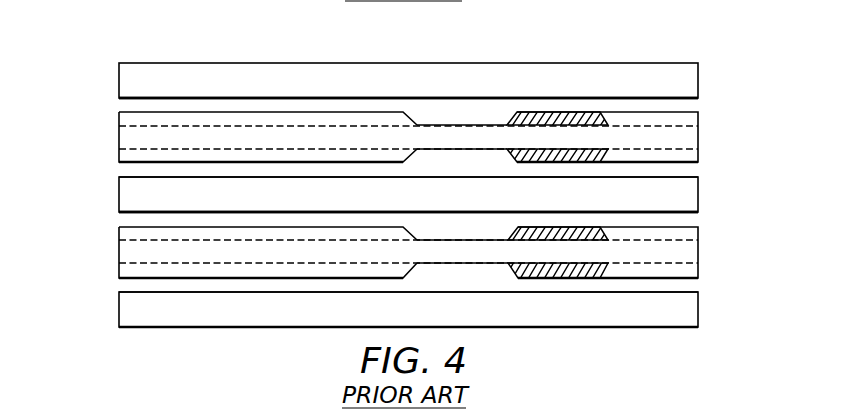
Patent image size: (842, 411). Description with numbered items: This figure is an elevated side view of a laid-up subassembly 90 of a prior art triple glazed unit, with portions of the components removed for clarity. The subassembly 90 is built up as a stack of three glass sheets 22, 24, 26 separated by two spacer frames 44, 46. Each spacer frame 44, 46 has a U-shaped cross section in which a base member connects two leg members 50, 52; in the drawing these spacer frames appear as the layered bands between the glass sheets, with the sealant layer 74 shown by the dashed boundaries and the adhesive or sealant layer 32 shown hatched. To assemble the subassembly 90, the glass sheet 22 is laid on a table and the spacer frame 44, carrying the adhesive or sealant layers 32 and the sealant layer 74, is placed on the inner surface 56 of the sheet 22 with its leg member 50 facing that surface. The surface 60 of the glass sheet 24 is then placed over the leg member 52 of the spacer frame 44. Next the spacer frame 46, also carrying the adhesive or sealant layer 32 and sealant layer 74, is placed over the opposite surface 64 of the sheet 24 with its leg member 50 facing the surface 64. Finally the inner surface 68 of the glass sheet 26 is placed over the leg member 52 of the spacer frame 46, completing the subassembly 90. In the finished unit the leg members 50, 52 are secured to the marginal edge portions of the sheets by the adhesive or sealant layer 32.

The glass sheet 22 is at (697, 308).
The glass sheet 24 is at (695, 195).
The glass sheet 26 is at (700, 80).
The adhesive or sealant layer 32 is at (561, 112).
The spacer frame 44 is at (128, 252).
The spacer frame 46 is at (120, 146).
The leg member 50 is at (441, 150).
The leg member 52 is at (441, 126).
The inner surface 56 is at (693, 286).
The surface 60 is at (693, 223).
The surface 64 is at (693, 170).
The inner surface 68 is at (695, 112).
The sealant layer 74 is at (122, 137).
The subassembly 90 is at (662, 41).